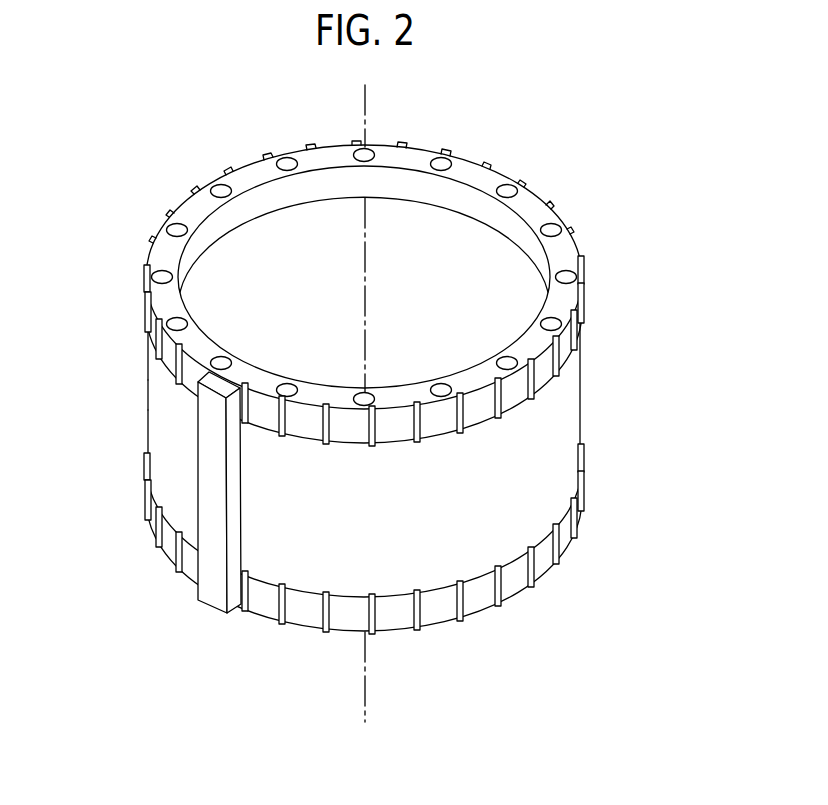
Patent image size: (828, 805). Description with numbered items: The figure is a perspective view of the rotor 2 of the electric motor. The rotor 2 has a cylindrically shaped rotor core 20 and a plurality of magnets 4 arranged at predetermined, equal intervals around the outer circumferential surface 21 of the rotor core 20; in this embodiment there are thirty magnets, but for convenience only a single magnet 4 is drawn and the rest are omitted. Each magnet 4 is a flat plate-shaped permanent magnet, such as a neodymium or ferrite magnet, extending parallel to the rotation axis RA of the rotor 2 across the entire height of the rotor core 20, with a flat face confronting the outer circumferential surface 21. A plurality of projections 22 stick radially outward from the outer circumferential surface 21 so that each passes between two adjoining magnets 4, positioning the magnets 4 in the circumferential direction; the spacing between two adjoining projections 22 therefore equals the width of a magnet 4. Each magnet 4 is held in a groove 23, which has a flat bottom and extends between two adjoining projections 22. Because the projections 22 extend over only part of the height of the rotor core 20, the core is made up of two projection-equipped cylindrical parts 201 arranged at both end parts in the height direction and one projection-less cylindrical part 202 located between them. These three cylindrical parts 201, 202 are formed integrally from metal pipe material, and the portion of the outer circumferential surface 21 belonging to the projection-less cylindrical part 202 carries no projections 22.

The rotor 2 is at (98, 148).
The rotor core 20 is at (468, 172).
The projection-equipped cylindrical part 201 is at (433, 423).
The projection-less cylindrical part 202 is at (590, 381).
The outer circumferential surface 21 is at (148, 392).
The projection 22 is at (208, 378).
The groove 23 is at (263, 410).
The magnet 4 is at (213, 590).
The rotation axis RA is at (371, 105).